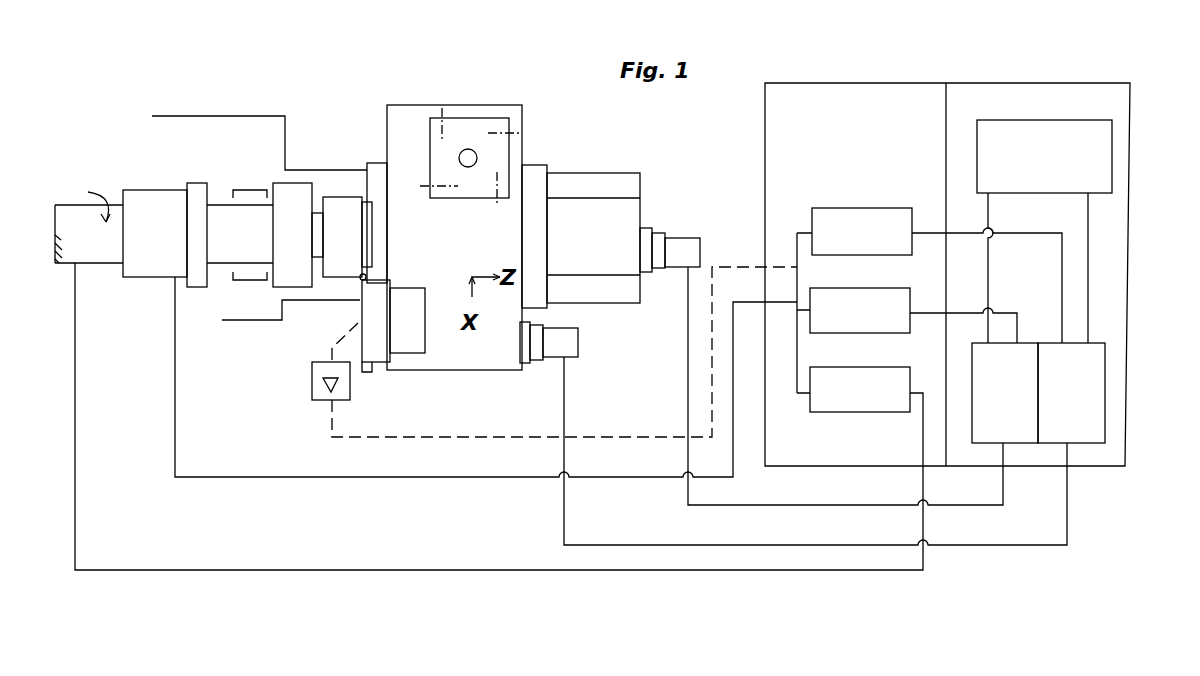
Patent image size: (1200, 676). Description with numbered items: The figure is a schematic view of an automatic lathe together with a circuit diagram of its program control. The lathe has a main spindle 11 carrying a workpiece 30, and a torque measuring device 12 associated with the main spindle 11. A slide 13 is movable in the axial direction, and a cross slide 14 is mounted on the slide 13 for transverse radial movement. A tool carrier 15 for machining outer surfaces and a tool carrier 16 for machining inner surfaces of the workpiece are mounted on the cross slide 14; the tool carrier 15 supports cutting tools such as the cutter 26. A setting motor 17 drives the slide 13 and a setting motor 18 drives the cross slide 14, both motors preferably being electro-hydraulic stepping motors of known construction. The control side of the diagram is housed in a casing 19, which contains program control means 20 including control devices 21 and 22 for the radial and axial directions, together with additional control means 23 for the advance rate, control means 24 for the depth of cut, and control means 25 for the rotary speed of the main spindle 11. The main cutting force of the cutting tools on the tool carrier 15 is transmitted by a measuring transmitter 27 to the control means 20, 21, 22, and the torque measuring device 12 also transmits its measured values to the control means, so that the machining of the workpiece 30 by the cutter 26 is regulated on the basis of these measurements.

The main spindle 11 is at (83, 213).
The torque measuring device 12 is at (153, 203).
The slide 13 is at (538, 172).
The cross slide 14 is at (405, 110).
The tool carrier 15 is at (373, 355).
The tool carrier 16 is at (470, 122).
The setting motor 17 is at (680, 245).
The setting motor 18 is at (558, 345).
The casing 19 is at (889, 95).
The program control means 20 is at (1100, 157).
The control device 21 is at (1093, 395).
The control device 22 is at (1010, 427).
The control means 23 is at (875, 305).
The control means 24 is at (858, 218).
The control means 25 is at (873, 402).
The cutter 26 is at (363, 278).
The measuring transmitter 27 is at (315, 378).
The workpiece 30 is at (340, 203).